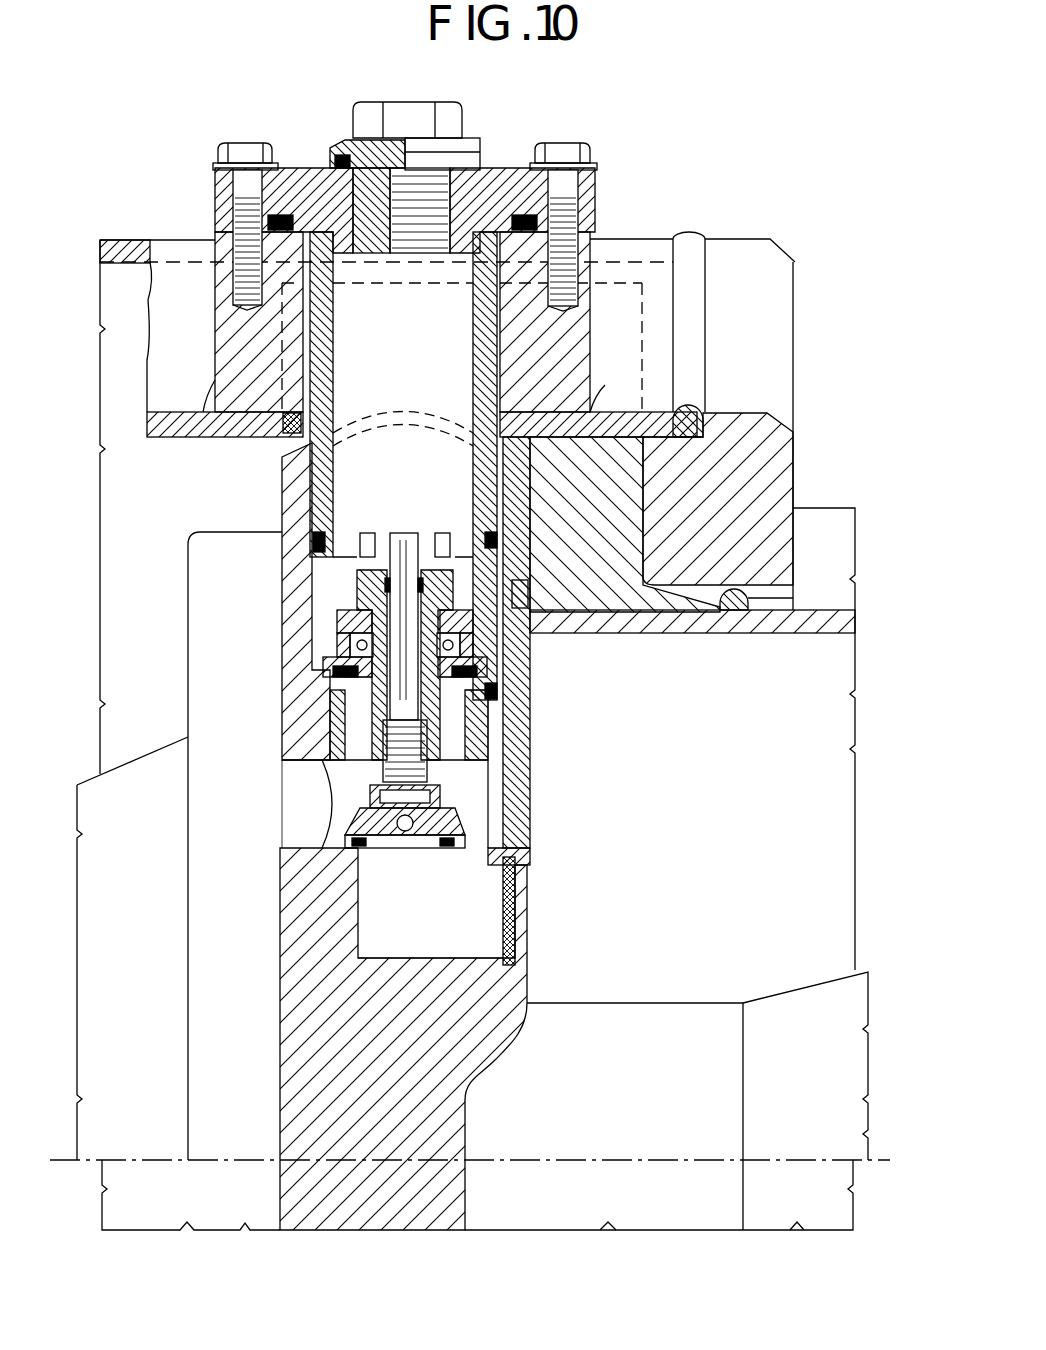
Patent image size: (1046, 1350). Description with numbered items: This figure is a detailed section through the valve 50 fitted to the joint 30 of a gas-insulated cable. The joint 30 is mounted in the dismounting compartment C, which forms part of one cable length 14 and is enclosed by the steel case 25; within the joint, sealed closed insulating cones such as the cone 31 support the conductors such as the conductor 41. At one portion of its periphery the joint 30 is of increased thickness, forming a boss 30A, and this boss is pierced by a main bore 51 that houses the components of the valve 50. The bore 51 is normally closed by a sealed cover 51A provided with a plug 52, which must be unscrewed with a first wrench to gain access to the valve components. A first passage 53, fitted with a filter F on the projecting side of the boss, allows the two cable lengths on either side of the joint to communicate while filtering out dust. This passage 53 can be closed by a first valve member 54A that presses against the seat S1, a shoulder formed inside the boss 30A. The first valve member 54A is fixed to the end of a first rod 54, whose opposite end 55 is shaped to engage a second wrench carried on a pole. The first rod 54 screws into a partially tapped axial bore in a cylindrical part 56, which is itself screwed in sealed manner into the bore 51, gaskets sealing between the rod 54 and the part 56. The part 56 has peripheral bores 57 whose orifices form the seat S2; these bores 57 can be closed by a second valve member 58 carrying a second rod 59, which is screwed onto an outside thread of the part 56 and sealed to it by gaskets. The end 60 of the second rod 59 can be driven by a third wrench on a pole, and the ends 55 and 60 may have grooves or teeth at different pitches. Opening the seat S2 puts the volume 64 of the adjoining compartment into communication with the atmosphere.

The dismounting compartment C is at (157, 238).
The length 14 is at (820, 505).
The steel case 25 is at (780, 624).
The joint 30 is at (478, 1128).
The boss 30A is at (502, 785).
The insulating cone 31 is at (152, 765).
The conductor 41 is at (648, 1023).
The valve 50 is at (306, 165).
The main bore 51 is at (413, 462).
The sealed cover 51A is at (493, 178).
The plug 52 is at (409, 112).
The first passage 53 is at (478, 931).
The first rod 54 is at (406, 626).
The first valve member 54A is at (423, 848).
The end 55 is at (413, 533).
The cylindrical part 56 is at (320, 733).
The peripheral bores 57 is at (357, 750).
The second valve member 58 is at (310, 690).
The second rod 59 is at (357, 588).
The end 60 is at (372, 533).
The volume 64 is at (767, 817).
The filter F is at (516, 884).
The seat S1 is at (357, 850).
The seat S2 is at (482, 747).